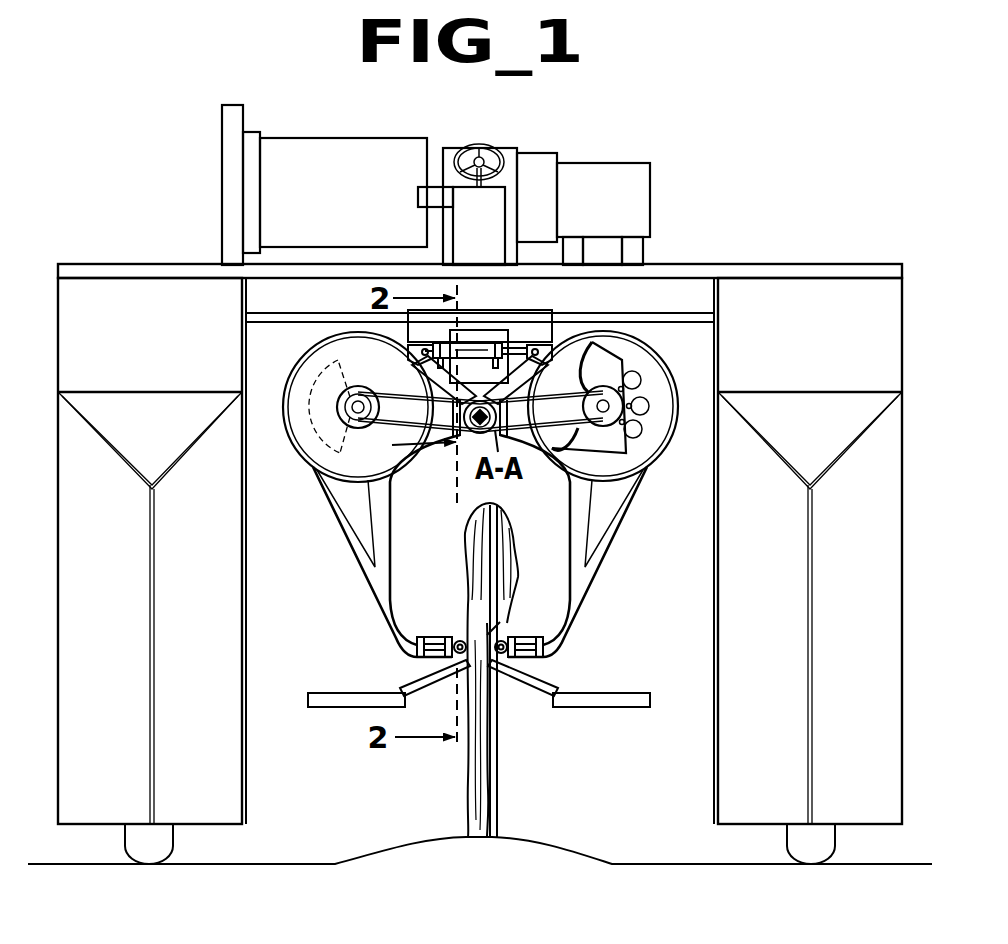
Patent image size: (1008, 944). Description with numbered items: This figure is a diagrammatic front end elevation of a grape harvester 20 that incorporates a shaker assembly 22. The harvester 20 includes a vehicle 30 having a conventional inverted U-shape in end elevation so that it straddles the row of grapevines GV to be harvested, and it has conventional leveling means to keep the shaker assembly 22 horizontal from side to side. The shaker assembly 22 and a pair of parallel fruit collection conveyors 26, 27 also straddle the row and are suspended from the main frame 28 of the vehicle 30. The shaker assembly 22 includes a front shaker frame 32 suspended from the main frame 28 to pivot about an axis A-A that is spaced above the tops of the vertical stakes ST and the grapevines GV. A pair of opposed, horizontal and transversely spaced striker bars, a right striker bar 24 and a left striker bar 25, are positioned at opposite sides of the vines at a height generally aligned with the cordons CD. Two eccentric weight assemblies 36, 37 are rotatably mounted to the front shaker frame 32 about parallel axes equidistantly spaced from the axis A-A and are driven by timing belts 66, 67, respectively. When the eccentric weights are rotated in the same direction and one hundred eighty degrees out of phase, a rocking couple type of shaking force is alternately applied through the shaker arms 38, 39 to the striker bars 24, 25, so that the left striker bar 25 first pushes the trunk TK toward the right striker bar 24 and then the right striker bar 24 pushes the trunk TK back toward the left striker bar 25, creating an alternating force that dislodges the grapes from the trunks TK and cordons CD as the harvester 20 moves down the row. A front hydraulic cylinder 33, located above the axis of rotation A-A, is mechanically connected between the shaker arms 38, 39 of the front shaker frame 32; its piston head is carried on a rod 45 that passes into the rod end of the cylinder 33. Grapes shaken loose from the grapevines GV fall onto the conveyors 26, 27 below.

The grape harvester 20 is at (728, 178).
The shaker assembly 22 is at (610, 633).
The right striker bar 24 is at (466, 637).
The left striker bar 25 is at (505, 637).
The conveyor 26 is at (330, 708).
The conveyor 27 is at (597, 708).
The main frame 28 is at (643, 298).
The vehicle 30 is at (778, 260).
The front shaker frame 32 is at (603, 588).
The front hydraulic cylinder 33 is at (466, 343).
The eccentric weight assembly 36 is at (320, 446).
The eccentric weight assembly 37 is at (651, 388).
The shaker arm 38 is at (355, 553).
The shaker arm 39 is at (617, 553).
The rod 45 is at (516, 343).
The timing belt 66 is at (421, 393).
The timing belt 67 is at (546, 393).
The cordons CD is at (477, 603).
The trunk TK is at (473, 765).
The stake ST is at (497, 747).
The grapevines GV is at (468, 802).